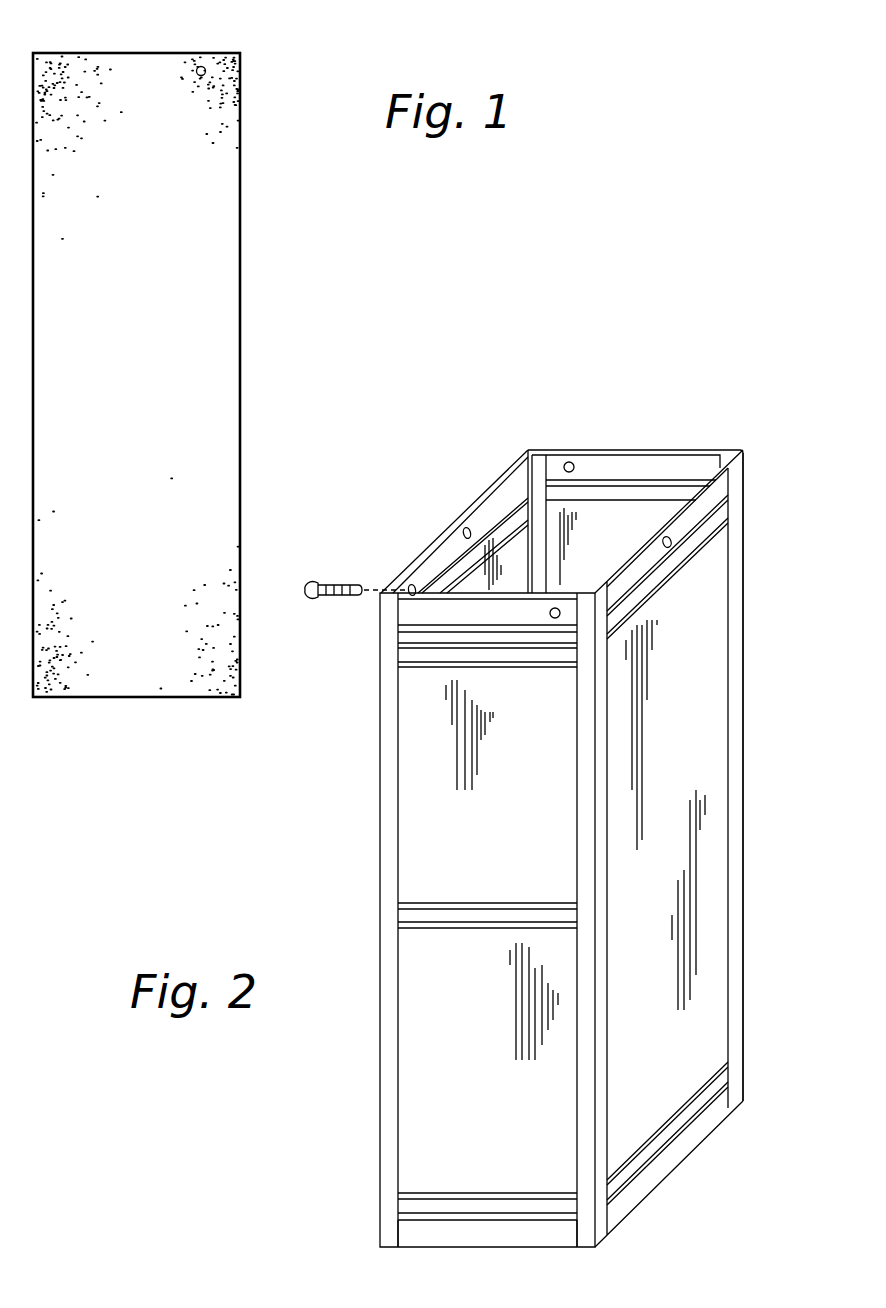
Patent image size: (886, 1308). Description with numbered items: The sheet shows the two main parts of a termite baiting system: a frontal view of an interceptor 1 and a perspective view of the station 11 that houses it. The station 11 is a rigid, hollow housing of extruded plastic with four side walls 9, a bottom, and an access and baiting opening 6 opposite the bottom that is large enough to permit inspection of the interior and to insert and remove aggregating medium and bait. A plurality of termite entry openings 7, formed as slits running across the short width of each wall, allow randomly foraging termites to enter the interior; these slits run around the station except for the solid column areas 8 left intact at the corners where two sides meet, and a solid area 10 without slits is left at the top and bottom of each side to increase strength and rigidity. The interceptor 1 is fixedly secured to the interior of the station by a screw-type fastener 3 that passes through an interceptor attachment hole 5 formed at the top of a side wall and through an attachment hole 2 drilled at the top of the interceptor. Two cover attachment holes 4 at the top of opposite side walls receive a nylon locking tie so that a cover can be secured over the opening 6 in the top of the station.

In FIG. 1, the interceptor 1 is at (102, 47).
In FIG. 1, the attachment hole 2 is at (205, 64).
In FIG. 2, the fastener 3 is at (357, 582).
In FIG. 2, the cover attachment hole 4 is at (467, 527).
In FIG. 2, the interceptor attachment hole 5 is at (574, 460).
In FIG. 2, the access and baiting opening 6 is at (588, 548).
In FIG. 2, the termite entry opening 7 is at (655, 475).
In FIG. 2, the solid column area of wall 8 is at (738, 585).
In FIG. 2, the station side wall 9 is at (685, 661).
In FIG. 2, the solid area at bottom of wall 10 is at (417, 1233).
In FIG. 2, the station 11 is at (755, 1025).